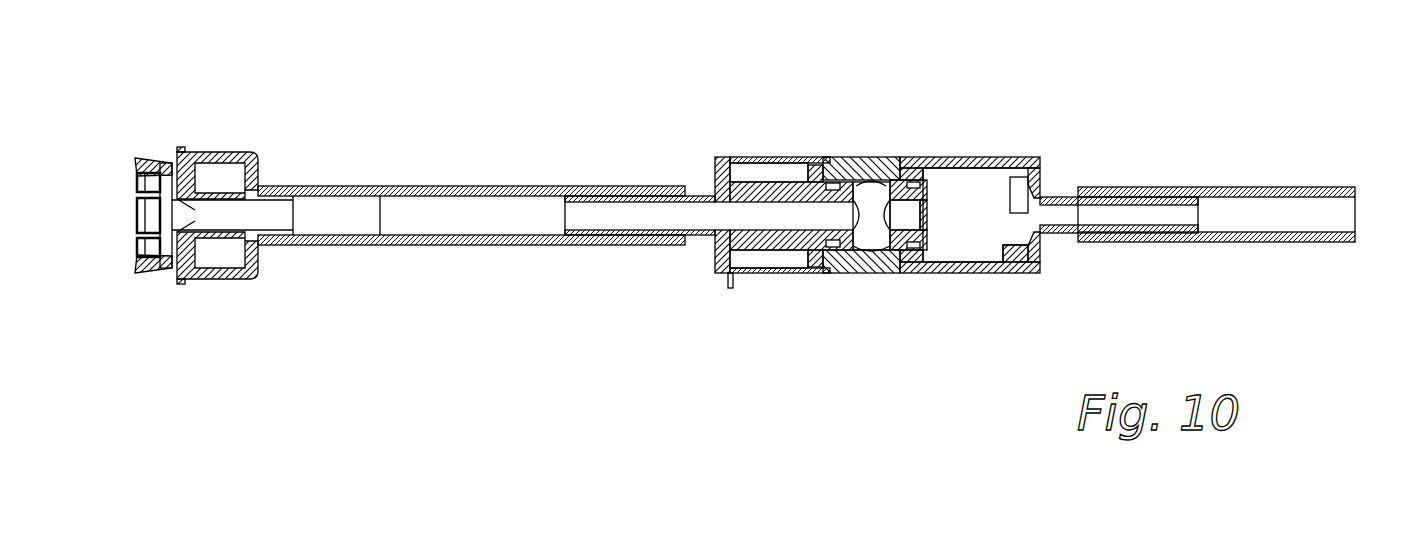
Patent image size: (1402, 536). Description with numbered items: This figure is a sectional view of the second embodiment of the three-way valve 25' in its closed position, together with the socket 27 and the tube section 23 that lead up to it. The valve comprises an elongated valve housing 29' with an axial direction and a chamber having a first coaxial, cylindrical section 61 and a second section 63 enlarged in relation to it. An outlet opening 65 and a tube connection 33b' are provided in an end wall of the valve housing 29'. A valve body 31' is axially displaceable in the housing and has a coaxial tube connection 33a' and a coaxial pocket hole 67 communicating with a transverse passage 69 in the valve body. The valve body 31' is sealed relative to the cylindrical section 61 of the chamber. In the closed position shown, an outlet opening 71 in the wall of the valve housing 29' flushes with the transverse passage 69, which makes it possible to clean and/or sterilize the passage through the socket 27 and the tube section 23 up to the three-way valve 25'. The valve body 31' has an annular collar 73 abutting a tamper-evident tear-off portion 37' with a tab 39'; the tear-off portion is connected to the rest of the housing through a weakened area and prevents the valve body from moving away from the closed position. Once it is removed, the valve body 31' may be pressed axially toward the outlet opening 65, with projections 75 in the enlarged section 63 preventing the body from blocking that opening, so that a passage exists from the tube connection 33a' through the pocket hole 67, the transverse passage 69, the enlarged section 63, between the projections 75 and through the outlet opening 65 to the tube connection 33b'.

The tube section 23 is at (405, 186).
The three-way valve 25' is at (921, 189).
The socket 27 is at (232, 112).
The valve housing 29' is at (861, 174).
The valve body 31' is at (791, 279).
The tube connection 33a' is at (640, 164).
The tube connection 33b' is at (1119, 171).
The tear-off portion 37' is at (776, 162).
The tab 39' is at (703, 318).
The first coaxial, cylindrical section 61 is at (900, 157).
The second section 63 is at (1017, 232).
The outlet opening 65 is at (1043, 213).
The pocket hole 67 is at (748, 208).
The transverse passage 69 is at (870, 240).
The outlet opening 71 is at (884, 258).
The annular collar 73 is at (715, 268).
The projections 75 is at (1063, 197).